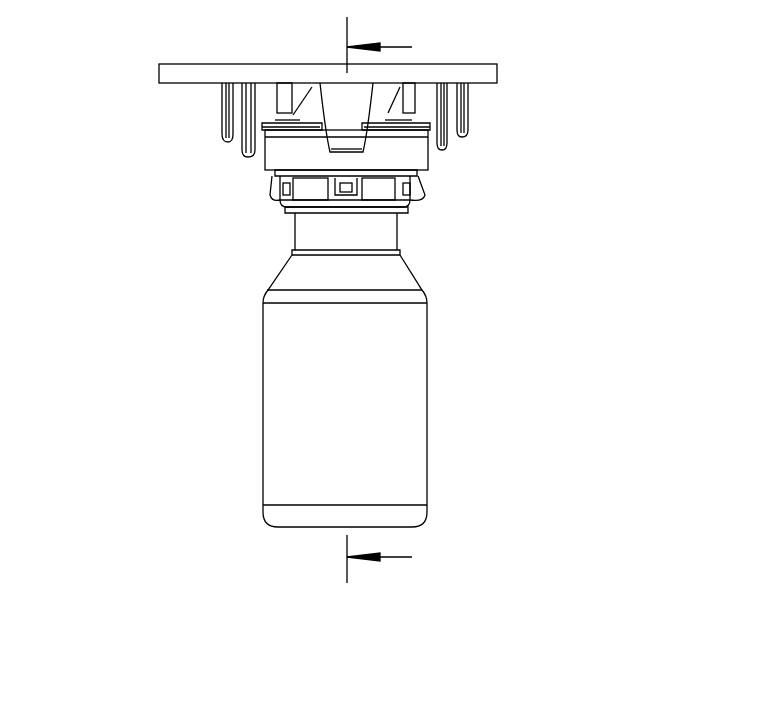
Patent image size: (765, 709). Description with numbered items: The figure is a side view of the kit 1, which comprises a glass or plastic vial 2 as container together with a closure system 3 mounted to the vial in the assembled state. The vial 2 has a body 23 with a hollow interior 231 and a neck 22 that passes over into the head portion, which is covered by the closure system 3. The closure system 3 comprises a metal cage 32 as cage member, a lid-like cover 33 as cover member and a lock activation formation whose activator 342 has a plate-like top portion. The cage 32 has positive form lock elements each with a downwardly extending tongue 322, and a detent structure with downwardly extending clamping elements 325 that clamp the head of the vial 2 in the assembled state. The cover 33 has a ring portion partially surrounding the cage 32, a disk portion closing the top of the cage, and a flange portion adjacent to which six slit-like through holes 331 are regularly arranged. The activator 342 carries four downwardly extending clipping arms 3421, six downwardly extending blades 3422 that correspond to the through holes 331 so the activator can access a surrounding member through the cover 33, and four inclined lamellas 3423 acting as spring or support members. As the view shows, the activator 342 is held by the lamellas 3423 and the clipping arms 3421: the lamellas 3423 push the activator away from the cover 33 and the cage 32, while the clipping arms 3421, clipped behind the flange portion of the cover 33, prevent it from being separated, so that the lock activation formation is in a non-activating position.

The kit 1 is at (216, 450).
The vial 2 is at (250, 360).
The neck 22 is at (398, 223).
The body 23 is at (410, 402).
The hollow interior 231 is at (363, 460).
The closure system 3 is at (501, 133).
The cage 32 is at (243, 192).
The tongue 322 is at (420, 192).
The clamping element 325 is at (286, 190).
The cover 33 is at (444, 163).
The through hole 331 is at (265, 128).
The activator 342 is at (519, 80).
The clipping arm 3421 is at (435, 100).
The blade 3422 is at (283, 92).
The lamella 3423 is at (305, 95).